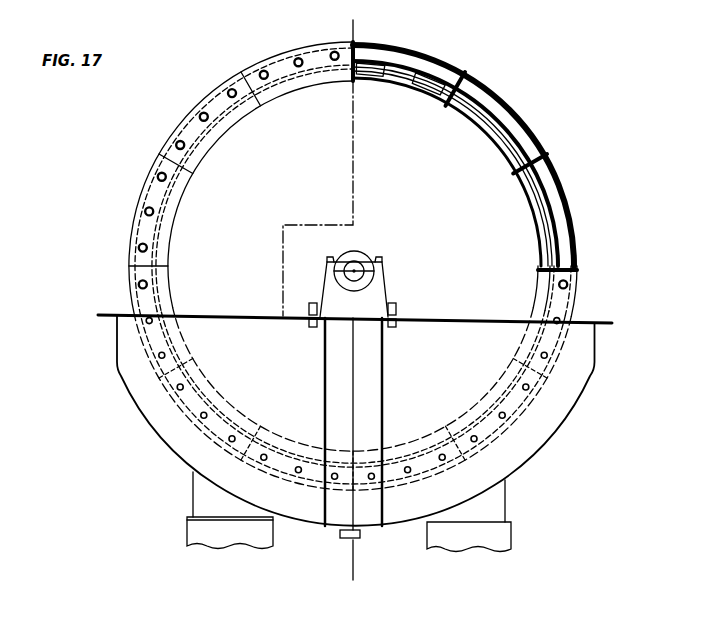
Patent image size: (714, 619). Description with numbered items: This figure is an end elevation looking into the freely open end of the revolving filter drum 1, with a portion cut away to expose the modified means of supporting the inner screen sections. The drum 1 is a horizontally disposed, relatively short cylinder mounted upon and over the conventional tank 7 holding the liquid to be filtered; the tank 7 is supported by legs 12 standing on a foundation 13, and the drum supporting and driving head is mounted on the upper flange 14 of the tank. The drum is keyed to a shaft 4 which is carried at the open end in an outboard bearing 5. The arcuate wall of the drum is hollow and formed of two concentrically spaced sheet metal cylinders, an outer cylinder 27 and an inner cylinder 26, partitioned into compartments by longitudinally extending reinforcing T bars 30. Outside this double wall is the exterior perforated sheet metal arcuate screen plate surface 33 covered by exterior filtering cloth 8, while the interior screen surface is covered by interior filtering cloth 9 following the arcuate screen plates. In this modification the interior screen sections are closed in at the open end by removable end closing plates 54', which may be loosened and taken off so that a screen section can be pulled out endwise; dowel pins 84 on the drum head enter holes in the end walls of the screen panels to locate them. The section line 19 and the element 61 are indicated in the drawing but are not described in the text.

The cylinder or drum 1 is at (513, 133).
The shaft 4 is at (360, 262).
The bearing 5 is at (385, 285).
The tank 7 is at (552, 449).
The exterior filtering cloth 8 is at (573, 225).
The interior filtering cloth 9 is at (483, 137).
The legs 12 is at (505, 503).
The foundation 13 is at (510, 540).
The upper flange 14 is at (444, 324).
The section line 19 is at (362, 27).
The inner sheet metal cylinder 26 is at (450, 83).
The outer sheet metal cylinder 27 is at (438, 64).
The T bars 30 is at (565, 180).
The exterior perforated screen plate surface 33 is at (567, 245).
The end closing plates 54' is at (353, 266).
The spacer 61 is at (462, 115).
The dowel pins 84 is at (383, 82).